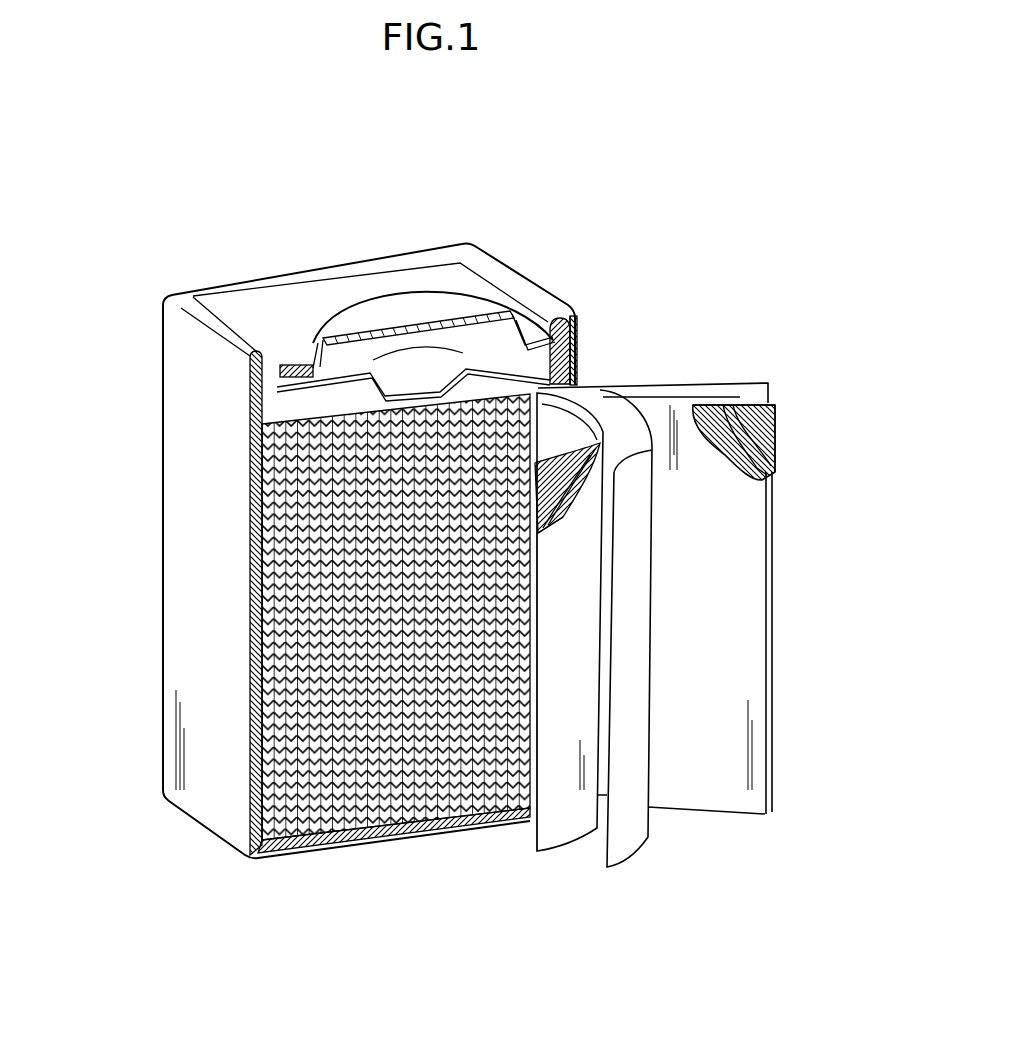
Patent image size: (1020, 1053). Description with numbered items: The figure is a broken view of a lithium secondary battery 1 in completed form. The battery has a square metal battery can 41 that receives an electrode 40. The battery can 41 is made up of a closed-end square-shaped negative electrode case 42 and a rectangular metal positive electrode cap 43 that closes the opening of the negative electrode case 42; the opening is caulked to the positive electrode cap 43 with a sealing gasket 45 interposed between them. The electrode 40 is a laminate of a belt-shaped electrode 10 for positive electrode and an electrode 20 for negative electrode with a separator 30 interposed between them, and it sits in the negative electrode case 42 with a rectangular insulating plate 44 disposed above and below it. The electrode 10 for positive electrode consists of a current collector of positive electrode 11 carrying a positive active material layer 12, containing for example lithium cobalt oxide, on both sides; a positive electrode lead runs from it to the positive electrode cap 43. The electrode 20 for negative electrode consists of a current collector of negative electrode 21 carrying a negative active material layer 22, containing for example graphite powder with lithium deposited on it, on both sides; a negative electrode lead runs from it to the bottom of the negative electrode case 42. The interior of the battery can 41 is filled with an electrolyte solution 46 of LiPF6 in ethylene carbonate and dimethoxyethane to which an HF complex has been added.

The lithium secondary battery 1 is at (691, 228).
The electrode for positive electrode 10 is at (845, 575).
The current collector of positive electrode 11 is at (685, 576).
The positive active material layer 12 is at (683, 556).
The electrode for negative electrode 20 is at (845, 422).
The current collector of negative electrode 21 is at (777, 474).
The negative active material layer 22 is at (777, 434).
The separator 30 is at (752, 392).
The electrode 40 is at (625, 362).
The battery can 41 is at (92, 372).
The negative electrode case 42 is at (175, 447).
The positive electrode cap 43 is at (238, 309).
The insulating plate 44 is at (513, 373).
The sealing gasket 45 is at (567, 345).
The electrolyte solution 46 is at (345, 818).